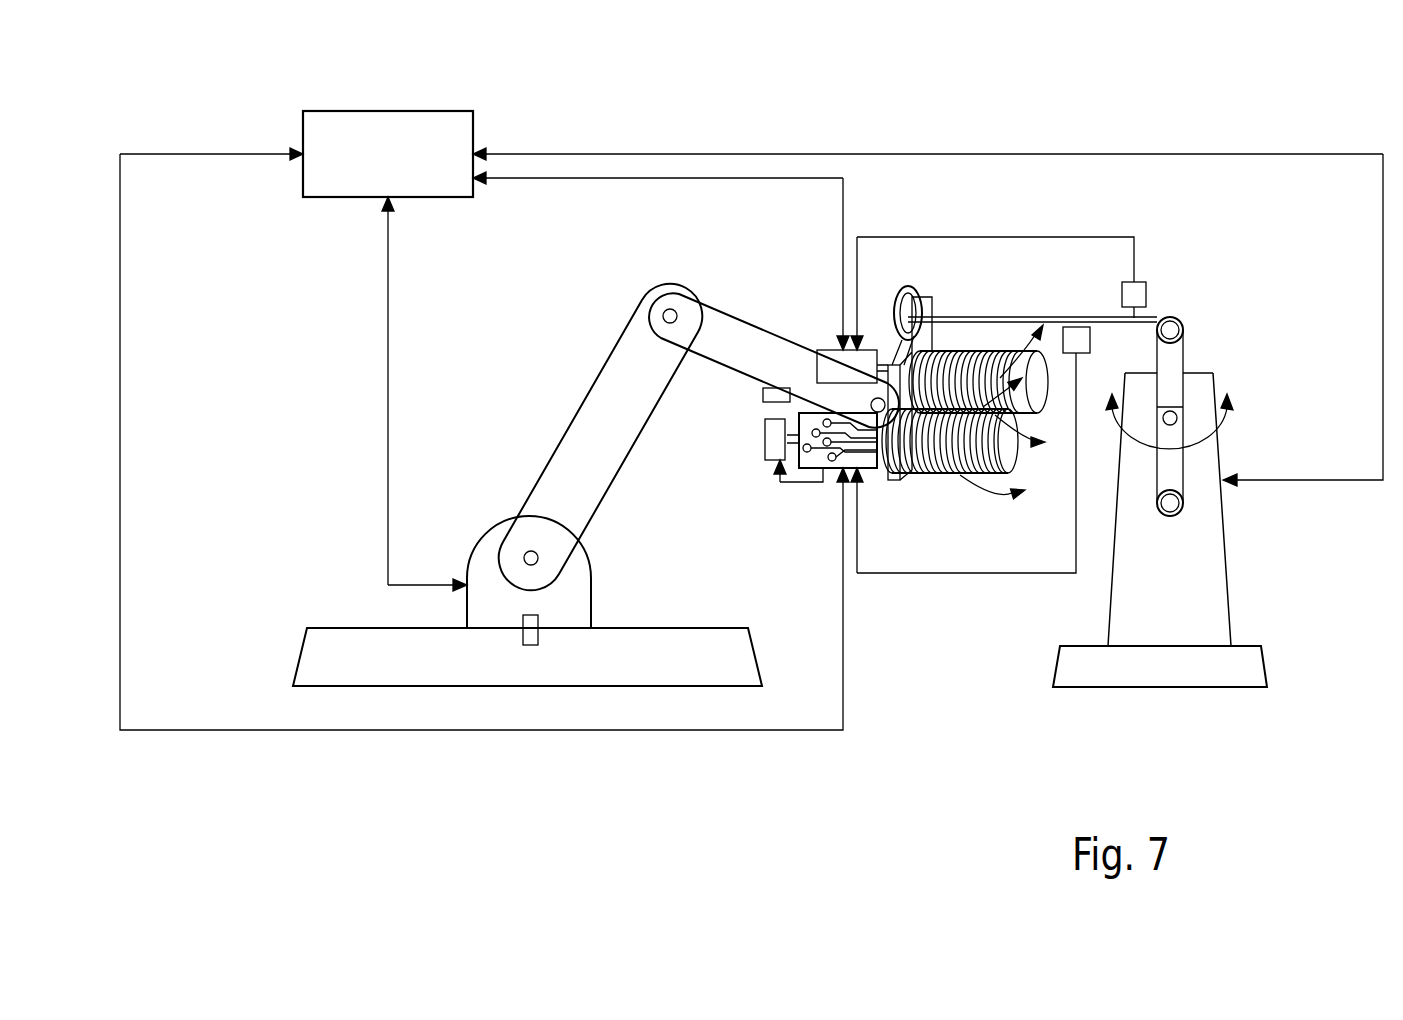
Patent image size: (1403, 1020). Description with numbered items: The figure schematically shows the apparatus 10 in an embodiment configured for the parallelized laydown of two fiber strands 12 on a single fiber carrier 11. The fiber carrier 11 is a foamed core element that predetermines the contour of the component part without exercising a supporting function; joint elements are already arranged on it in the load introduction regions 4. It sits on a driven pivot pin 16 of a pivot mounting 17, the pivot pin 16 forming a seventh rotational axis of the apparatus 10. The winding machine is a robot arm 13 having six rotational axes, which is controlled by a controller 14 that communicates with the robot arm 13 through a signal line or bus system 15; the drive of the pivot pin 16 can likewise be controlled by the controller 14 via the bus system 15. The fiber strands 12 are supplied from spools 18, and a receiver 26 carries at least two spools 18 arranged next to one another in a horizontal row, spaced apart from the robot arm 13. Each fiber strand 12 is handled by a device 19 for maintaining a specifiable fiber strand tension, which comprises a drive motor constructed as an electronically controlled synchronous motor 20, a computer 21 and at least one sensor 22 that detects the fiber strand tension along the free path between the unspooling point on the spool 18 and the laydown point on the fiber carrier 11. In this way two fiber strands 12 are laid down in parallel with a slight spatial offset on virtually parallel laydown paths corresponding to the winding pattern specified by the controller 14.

The load introduction regions 4 is at (1180, 330).
The apparatus 10 is at (898, 697).
The fiber carrier 11 is at (1172, 362).
The fiber strand 12 is at (1013, 317).
The robot arm 13 is at (572, 394).
The controller 14 is at (318, 112).
The bus system 15 is at (838, 154).
The pivot pin 16 is at (1178, 418).
The pivot mounting 17 is at (1177, 605).
The spool 18 is at (970, 351).
The device for maintaining fiber strand tension 19 is at (948, 278).
The synchronous motor 20 is at (765, 392).
The computer 21 is at (865, 350).
The sensor 22 is at (1076, 327).
The receiver 26 is at (898, 482).